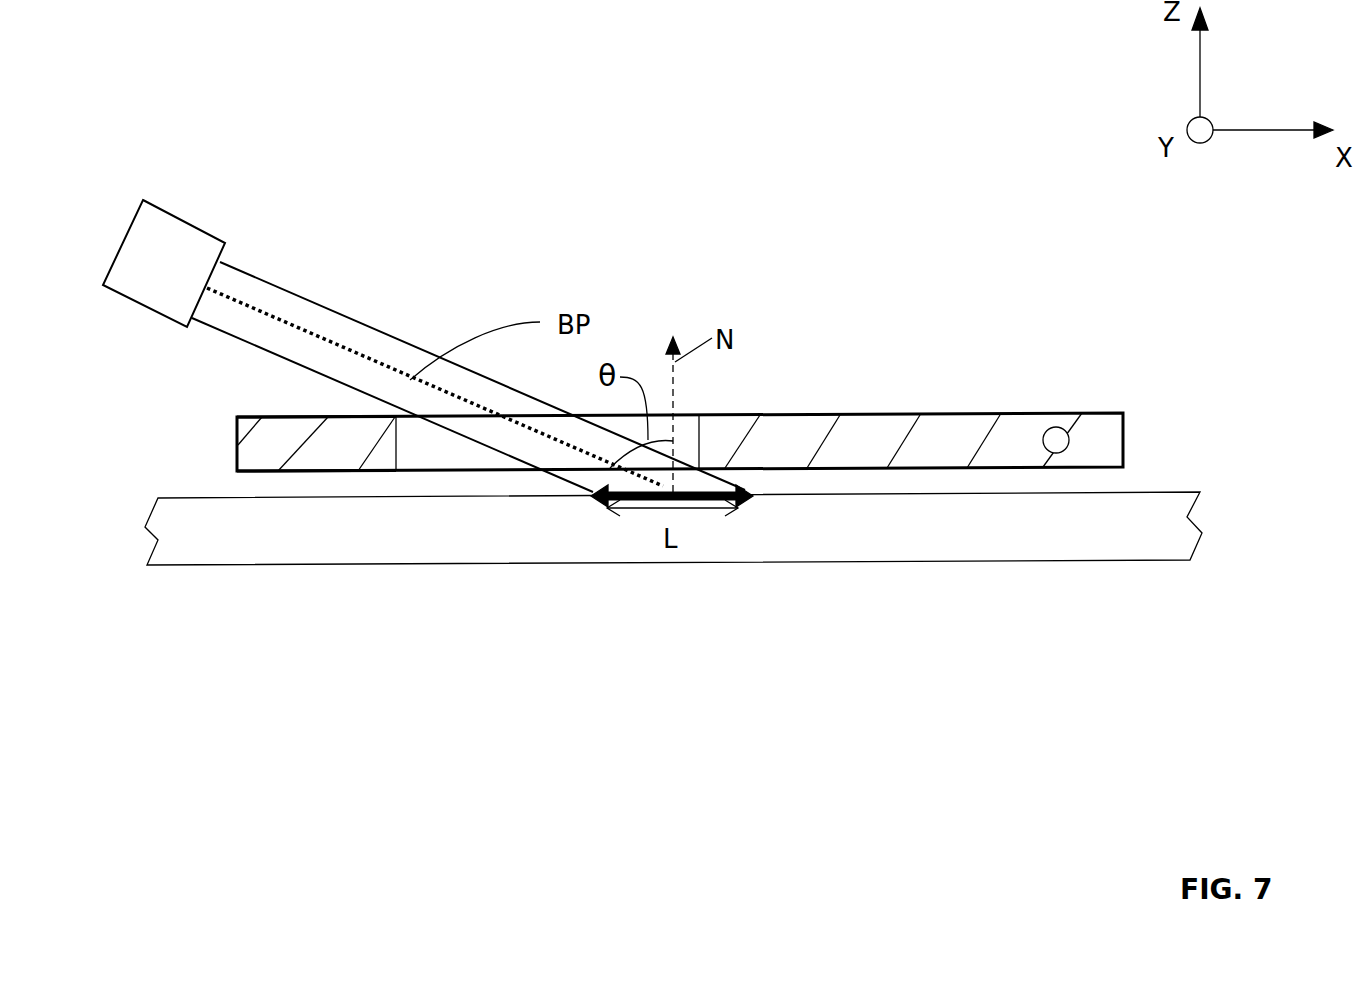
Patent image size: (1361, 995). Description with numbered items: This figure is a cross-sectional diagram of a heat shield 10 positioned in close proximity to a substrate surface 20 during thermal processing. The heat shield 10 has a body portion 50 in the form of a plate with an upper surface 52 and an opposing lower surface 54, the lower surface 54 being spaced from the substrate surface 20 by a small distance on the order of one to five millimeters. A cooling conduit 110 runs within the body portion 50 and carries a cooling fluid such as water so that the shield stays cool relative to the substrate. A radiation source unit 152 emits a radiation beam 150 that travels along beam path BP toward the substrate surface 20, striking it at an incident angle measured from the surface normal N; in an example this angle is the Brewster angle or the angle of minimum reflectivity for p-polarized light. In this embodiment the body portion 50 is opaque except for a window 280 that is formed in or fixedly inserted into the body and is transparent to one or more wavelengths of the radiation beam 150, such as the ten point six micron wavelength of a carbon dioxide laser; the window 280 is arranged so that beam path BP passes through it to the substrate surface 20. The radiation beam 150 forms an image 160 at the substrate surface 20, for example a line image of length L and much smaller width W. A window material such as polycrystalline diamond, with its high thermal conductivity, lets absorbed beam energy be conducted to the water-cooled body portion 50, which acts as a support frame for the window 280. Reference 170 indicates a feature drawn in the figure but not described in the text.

The heat shield 10 is at (686, 503).
The substrate surface 20 is at (1177, 490).
The body portion 50 is at (252, 447).
The upper surface 52 is at (292, 417).
The lower surface 54 is at (303, 475).
The cooling conduit 110 is at (1067, 436).
The radiation beam 150 is at (303, 312).
The radiation source unit 152 is at (168, 214).
The image 160 is at (735, 497).
The gap 170 is at (212, 484).
The window 280 is at (448, 458).